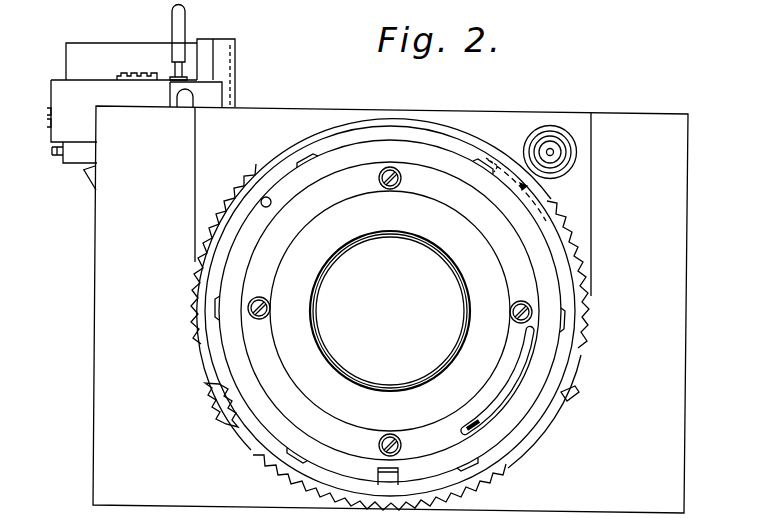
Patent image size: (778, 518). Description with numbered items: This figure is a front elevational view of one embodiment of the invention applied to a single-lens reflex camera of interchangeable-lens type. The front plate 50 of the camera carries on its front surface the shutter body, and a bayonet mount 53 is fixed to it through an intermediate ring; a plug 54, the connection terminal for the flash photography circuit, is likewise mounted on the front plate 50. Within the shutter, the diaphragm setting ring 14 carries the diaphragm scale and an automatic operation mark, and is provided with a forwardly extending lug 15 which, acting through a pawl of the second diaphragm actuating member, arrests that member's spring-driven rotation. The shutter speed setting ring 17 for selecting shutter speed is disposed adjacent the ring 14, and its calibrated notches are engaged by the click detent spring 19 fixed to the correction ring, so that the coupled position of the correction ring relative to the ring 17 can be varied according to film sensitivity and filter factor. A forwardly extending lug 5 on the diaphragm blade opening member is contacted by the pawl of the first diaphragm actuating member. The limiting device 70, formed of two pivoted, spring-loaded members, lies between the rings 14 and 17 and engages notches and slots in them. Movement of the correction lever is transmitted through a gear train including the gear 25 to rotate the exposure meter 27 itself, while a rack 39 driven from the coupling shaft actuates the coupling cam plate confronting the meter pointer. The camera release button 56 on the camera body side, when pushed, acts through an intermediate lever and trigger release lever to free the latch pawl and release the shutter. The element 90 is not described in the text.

The forwardly extending lug 5 is at (468, 422).
The diaphragm setting ring 14 is at (336, 132).
The forwardly extending lug 15 is at (513, 395).
The shutter speed setting ring 17 is at (452, 133).
The click detent spring 19 is at (577, 397).
The gear 25 is at (86, 178).
The exposure meter 27 is at (90, 53).
The rack 39 is at (222, 93).
The front plate 50 is at (690, 283).
The bayonet mount 53 is at (470, 450).
The plug 54 is at (554, 126).
The camera release button 56 is at (187, 17).
The limiting device 70 is at (557, 223).
The block 90 is at (227, 47).